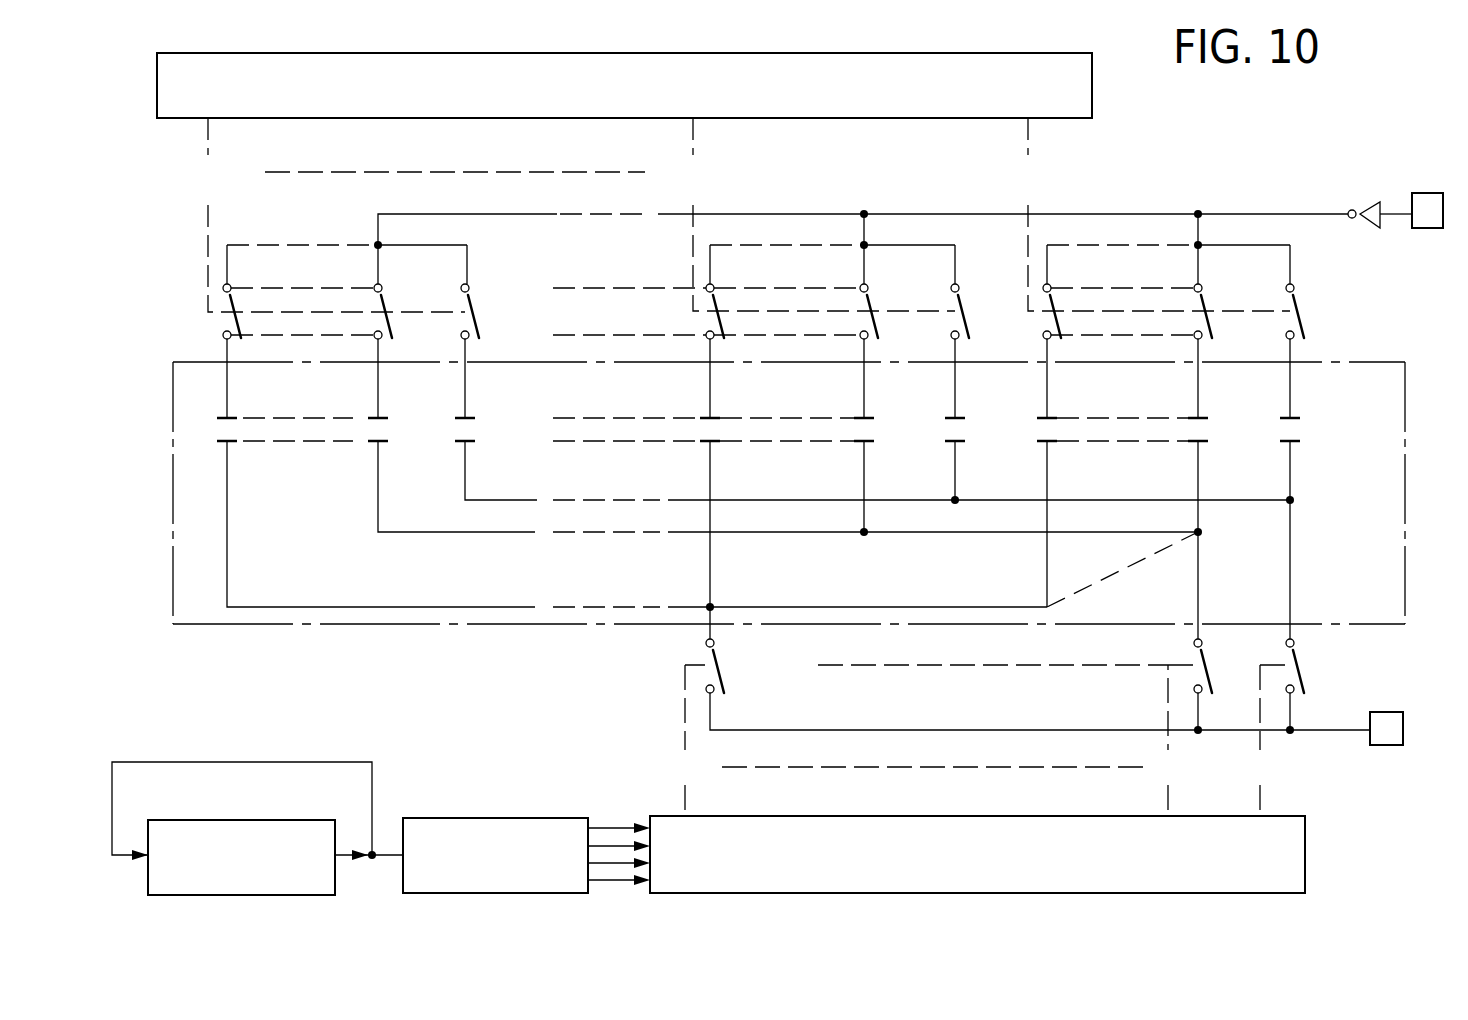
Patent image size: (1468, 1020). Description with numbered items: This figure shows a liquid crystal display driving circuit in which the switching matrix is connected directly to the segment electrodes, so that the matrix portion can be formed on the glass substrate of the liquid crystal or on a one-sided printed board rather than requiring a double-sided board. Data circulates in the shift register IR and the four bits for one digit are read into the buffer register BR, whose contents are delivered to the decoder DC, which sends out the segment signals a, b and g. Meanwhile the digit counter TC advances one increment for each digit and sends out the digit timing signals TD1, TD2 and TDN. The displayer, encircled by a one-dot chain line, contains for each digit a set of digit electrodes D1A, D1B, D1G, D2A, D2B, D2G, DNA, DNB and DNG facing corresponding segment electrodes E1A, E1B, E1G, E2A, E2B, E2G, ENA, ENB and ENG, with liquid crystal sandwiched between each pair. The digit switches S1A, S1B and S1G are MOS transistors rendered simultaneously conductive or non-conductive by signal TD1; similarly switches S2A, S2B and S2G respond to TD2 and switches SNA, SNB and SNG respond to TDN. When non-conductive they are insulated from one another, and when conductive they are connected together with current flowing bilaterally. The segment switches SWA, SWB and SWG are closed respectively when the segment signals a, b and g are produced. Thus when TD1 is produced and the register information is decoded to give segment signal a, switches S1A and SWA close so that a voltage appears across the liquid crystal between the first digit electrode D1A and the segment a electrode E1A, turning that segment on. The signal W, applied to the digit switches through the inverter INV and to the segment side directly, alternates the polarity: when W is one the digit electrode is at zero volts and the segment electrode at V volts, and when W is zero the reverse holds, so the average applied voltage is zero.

The digit counter TC is at (511, 53).
The signal TDN is at (330, 215).
The signal TD2 is at (818, 214).
The signal TD1 is at (1154, 214).
The inverter INV is at (1370, 202).
The signal W is at (1406, 469).
The switch SNG is at (232, 297).
The switch SNB is at (383, 297).
The switch SNA is at (470, 297).
The switch S2G is at (715, 297).
The switch S2B is at (869, 297).
The switch S2A is at (960, 297).
The MOS transistor S1G is at (1052, 297).
The MOS transistor S1B is at (1203, 297).
The MOS transistor S1A is at (1295, 297).
The digit electrode DNG is at (233, 416).
The digit electrode DNB is at (384, 416).
The digit electrode DNA is at (471, 416).
The digit electrode D2G is at (716, 416).
The digit electrode D2B is at (870, 416).
The digit electrode D2A is at (961, 416).
The digit electrode D1G is at (1053, 416).
The digit electrode D1B is at (1204, 416).
The first digit electrode D1A is at (1296, 416).
The segment electrode ENG is at (233, 443).
The segment electrode ENB is at (384, 443).
The segment electrode ENA is at (471, 443).
The segment electrode E2G is at (716, 443).
The segment electrode E2B is at (870, 443).
The segment electrode E2A is at (961, 443).
The segment electrode E1G is at (1053, 443).
The segment electrode E1B is at (1204, 443).
The segment a electrode E1A is at (1296, 443).
The switch SWG is at (718, 664).
The switch SWB is at (1206, 664).
The switch SWA is at (1298, 664).
The shift register IR is at (267, 820).
The buffer register BR is at (490, 818).
The decoder DC is at (1305, 855).
The segment signal g is at (691, 740).
The segment signal b is at (1007, 740).
The segment signal a is at (1270, 740).